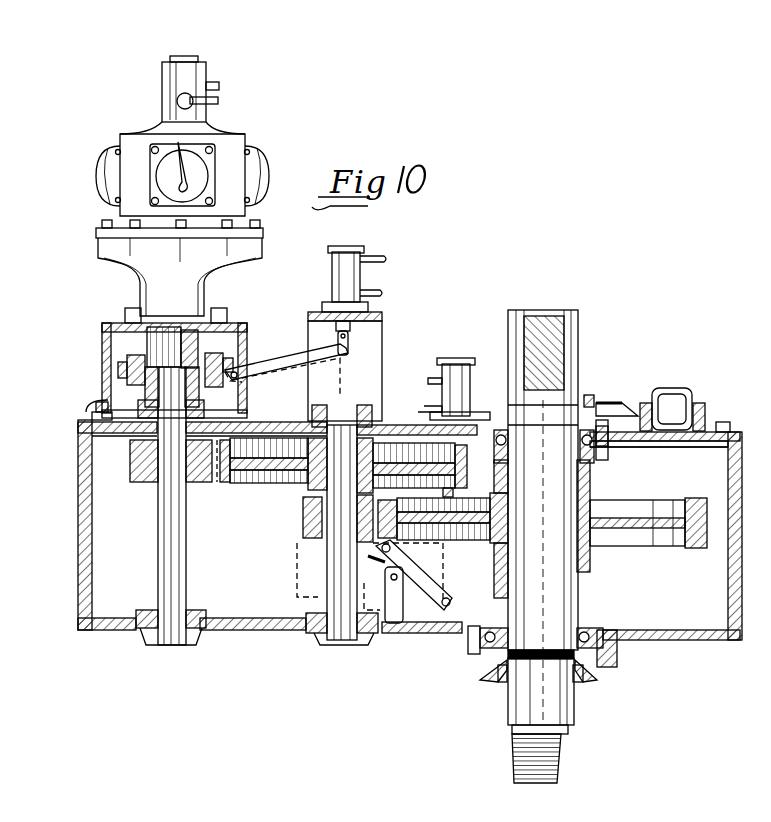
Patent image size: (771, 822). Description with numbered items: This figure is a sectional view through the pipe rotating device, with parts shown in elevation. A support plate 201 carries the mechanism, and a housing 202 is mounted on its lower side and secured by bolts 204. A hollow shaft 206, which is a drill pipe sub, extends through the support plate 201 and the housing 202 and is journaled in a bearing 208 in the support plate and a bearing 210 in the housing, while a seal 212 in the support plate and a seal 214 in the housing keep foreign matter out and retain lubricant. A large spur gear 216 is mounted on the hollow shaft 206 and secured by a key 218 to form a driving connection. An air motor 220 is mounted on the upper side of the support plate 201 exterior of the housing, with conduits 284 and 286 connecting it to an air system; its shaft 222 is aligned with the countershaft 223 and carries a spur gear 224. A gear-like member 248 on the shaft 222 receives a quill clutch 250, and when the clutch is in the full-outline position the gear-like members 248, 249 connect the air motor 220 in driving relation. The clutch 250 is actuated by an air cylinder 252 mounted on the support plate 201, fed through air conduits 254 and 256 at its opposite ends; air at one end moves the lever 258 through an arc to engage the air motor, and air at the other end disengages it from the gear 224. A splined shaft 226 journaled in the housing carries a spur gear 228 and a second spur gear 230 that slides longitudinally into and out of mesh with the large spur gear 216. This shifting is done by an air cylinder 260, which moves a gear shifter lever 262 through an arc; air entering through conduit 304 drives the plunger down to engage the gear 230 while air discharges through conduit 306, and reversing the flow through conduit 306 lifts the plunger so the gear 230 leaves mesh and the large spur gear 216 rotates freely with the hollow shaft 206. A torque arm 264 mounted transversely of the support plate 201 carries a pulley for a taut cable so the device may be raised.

The support plate 201 is at (717, 433).
The housing 202 is at (672, 645).
The bolts 204 is at (92, 428).
The hollow shaft 206 is at (568, 713).
The bearing 208 is at (600, 456).
The bearing 210 is at (588, 636).
The seal 212 is at (585, 412).
The seal 214 is at (577, 682).
The large spur gear 216 is at (640, 545).
The key 218 is at (470, 600).
The air motor 220 is at (238, 152).
The shaft 222 is at (180, 340).
The countershaft 223 is at (157, 525).
The spur gear 224 is at (128, 464).
The shaft 226 is at (322, 592).
The spur gear 228 is at (306, 480).
The second spur gear 230 is at (302, 518).
The gear-like member 248 is at (125, 352).
The gear-like member 249 is at (95, 416).
The quill clutch 250 is at (127, 384).
The air cylinder 252 is at (362, 280).
The air conduit 254 is at (374, 262).
The air conduit 256 is at (380, 295).
The lever 258 is at (290, 365).
The air cylinder 260 is at (470, 400).
The gear shifter lever 262 is at (420, 592).
The torque arm 264 is at (705, 371).
The conduit 284 is at (212, 86).
The conduit 286 is at (218, 102).
The conduit 304 is at (437, 388).
The conduit 306 is at (432, 412).